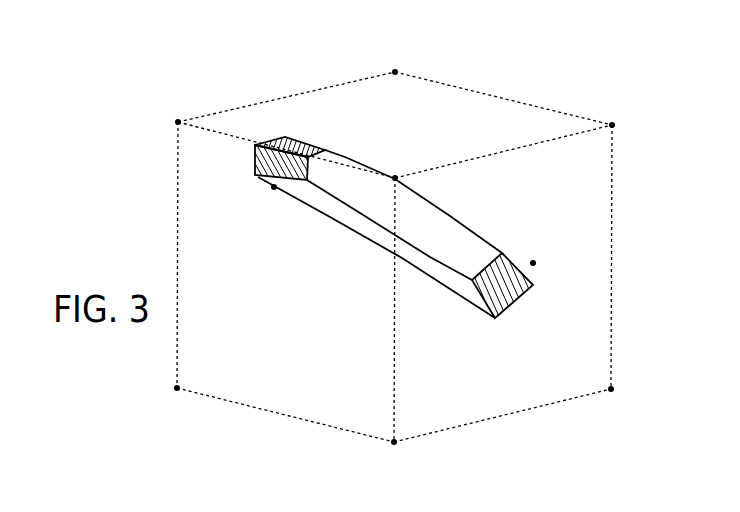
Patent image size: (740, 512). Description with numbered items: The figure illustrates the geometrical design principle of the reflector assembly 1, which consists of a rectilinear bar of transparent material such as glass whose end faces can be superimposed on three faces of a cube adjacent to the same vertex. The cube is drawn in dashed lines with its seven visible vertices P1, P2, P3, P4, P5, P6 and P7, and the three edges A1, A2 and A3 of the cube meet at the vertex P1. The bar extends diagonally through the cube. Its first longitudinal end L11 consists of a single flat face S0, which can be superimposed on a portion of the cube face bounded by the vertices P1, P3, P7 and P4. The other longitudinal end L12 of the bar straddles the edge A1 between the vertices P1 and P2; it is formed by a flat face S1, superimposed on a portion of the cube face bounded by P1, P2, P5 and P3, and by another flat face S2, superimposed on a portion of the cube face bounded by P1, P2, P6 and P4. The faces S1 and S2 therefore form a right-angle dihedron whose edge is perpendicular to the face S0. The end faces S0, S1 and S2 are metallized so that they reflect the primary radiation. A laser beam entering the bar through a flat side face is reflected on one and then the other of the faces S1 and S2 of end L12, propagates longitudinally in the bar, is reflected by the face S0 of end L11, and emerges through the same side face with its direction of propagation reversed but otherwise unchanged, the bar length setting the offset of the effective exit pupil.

The reflector assembly 1 is at (363, 226).
The flat face S0 is at (517, 313).
The flat face S1 is at (253, 143).
The flat face S2 is at (287, 140).
The first longitudinal end L11 is at (533, 263).
The other longitudinal end L12 is at (274, 187).
The edge of the cube A1 is at (350, 148).
The edge of the cube A2 is at (400, 378).
The edge of the cube A3 is at (465, 148).
The vertex of the cube P1 is at (392, 163).
The vertex of the cube P2 is at (163, 117).
The vertex of the cube P3 is at (391, 456).
The vertex of the cube P4 is at (625, 130).
The vertex of the cube P5 is at (174, 402).
The vertex of the cube P6 is at (396, 59).
The vertex of the cube P7 is at (624, 394).